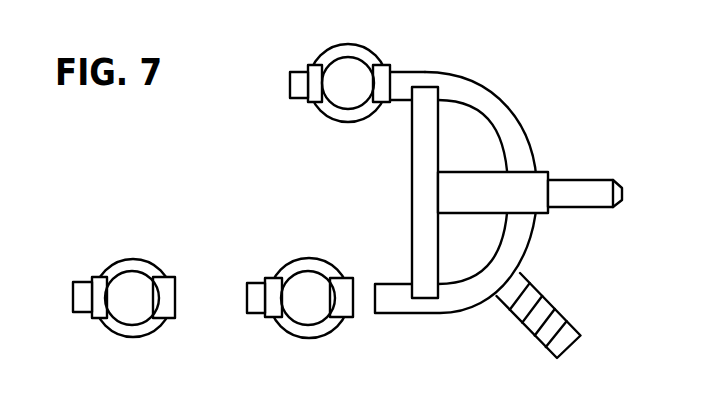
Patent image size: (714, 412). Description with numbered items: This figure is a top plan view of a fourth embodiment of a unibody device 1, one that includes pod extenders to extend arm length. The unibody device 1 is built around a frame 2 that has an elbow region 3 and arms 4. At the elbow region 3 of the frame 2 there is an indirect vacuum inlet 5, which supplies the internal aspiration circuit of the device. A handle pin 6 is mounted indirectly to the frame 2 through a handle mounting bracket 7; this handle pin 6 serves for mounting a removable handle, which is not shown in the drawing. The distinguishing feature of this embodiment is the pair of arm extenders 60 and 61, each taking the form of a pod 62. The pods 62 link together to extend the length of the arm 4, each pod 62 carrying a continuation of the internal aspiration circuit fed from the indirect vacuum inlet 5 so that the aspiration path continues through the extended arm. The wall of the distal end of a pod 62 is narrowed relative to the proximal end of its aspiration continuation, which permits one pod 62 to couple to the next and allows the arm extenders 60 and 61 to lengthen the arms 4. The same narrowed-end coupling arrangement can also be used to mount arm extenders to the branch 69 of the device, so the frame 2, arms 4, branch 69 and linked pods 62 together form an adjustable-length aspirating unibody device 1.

The unibody device 1 is at (548, 72).
The frame 2 is at (452, 71).
The elbow region 3 is at (533, 249).
The arm 4 is at (306, 100).
The indirect vacuum inlet 5 is at (582, 334).
The handle pin 6 is at (618, 180).
The handle mounting bracket 7 is at (412, 207).
The branch 69 is at (417, 71).
The first arm extender 60 is at (307, 337).
The second arm extender 61 is at (127, 337).
The pod 62 is at (90, 277).